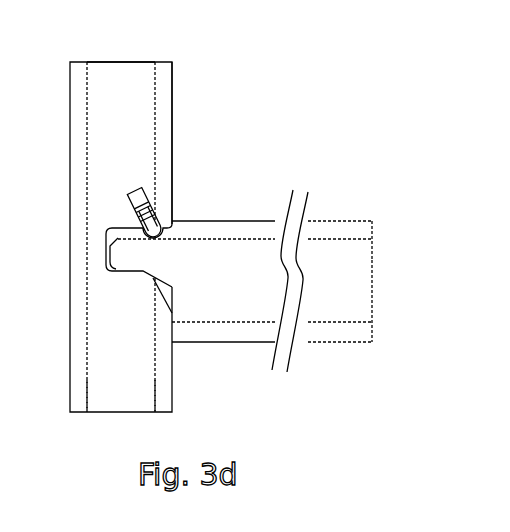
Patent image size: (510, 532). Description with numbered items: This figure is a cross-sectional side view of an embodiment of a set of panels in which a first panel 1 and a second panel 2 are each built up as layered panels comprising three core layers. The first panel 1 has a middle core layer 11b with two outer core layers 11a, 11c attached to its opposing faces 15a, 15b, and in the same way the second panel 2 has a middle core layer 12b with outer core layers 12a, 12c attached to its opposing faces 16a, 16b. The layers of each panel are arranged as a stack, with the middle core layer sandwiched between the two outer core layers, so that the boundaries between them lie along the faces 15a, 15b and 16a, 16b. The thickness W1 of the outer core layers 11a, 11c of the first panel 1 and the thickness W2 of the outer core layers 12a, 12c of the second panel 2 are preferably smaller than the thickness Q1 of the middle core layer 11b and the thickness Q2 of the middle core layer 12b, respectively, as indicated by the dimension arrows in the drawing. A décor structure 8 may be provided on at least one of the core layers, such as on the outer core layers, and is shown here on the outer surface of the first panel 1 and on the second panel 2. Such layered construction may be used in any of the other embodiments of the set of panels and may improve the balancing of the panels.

The first panel 1 is at (116, 131).
The second panel 2 is at (214, 287).
The décor structure 8 is at (172, 118).
The outer core layer 11a is at (161, 59).
The middle core layer 11b is at (119, 59).
The outer core layer 11c is at (78, 59).
The outer core layer 12a is at (372, 232).
The middle core layer 12b is at (372, 282).
The outer core layer 12c is at (372, 330).
The face of middle core layer 15a is at (155, 395).
The face of middle core layer 15b is at (89, 395).
The face of middle core layer 16a is at (347, 238).
The face of middle core layer 16b is at (346, 322).
The thickness of outer core layers W1 is at (130, 153).
The thickness of outer core layers W2 is at (248, 258).
The thickness of middle core layer Q1 is at (155, 340).
The thickness of middle core layer Q2 is at (326, 239).